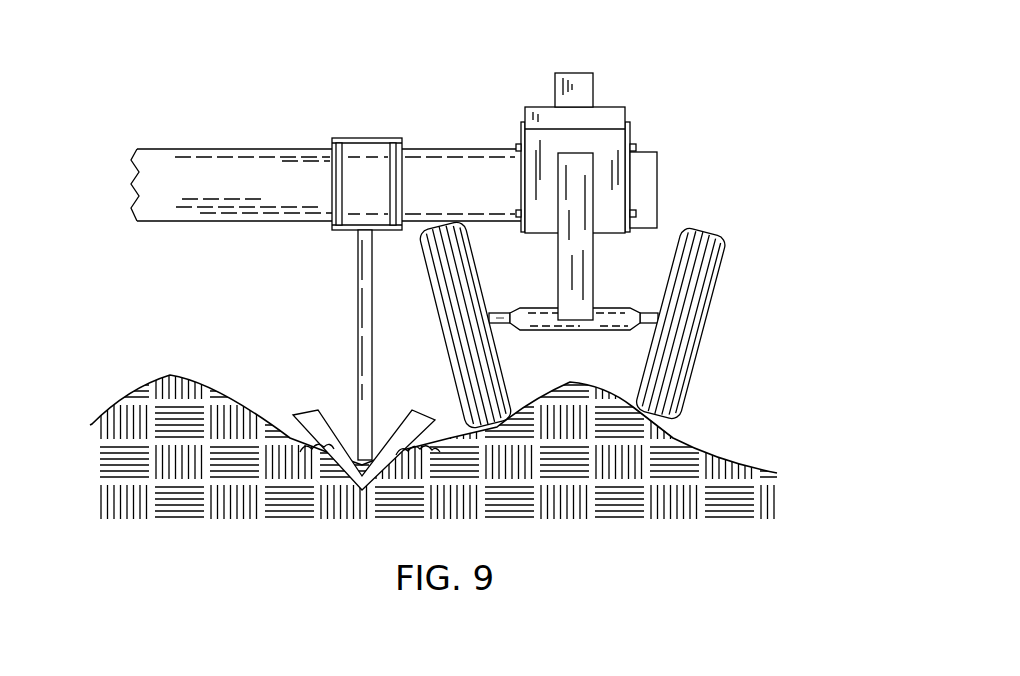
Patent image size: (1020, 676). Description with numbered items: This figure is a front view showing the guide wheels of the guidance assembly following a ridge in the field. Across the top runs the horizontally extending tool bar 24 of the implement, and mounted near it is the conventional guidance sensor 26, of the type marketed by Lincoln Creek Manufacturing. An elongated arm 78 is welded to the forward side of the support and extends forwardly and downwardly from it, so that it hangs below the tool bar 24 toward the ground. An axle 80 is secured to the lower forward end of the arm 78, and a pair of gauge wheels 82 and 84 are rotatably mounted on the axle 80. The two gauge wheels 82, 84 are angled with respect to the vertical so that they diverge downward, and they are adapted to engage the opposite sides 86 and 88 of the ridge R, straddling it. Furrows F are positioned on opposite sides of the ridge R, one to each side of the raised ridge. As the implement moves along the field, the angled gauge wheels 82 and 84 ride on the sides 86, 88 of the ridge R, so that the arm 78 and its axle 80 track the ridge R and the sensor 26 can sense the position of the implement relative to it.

The tool bar 24 is at (258, 163).
The guidance sensor 26 is at (594, 83).
The elongated arm 78 is at (572, 243).
The axle 80 is at (612, 318).
The gauge wheel 82 is at (470, 287).
The gauge wheel 84 is at (717, 268).
The side of ridge 86 is at (514, 340).
The side of ridge 88 is at (675, 437).
The ridge R is at (172, 373).
The furrow F is at (333, 455).